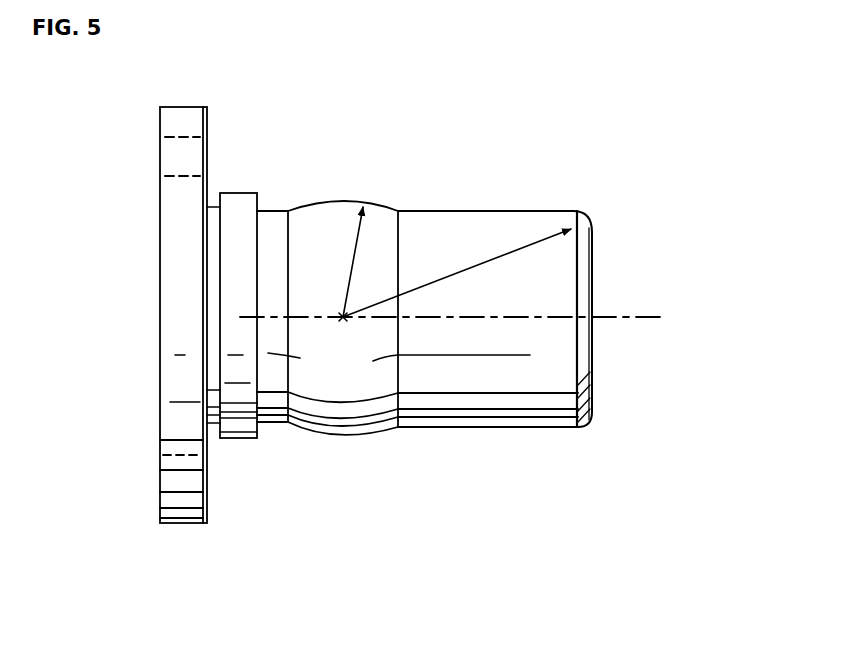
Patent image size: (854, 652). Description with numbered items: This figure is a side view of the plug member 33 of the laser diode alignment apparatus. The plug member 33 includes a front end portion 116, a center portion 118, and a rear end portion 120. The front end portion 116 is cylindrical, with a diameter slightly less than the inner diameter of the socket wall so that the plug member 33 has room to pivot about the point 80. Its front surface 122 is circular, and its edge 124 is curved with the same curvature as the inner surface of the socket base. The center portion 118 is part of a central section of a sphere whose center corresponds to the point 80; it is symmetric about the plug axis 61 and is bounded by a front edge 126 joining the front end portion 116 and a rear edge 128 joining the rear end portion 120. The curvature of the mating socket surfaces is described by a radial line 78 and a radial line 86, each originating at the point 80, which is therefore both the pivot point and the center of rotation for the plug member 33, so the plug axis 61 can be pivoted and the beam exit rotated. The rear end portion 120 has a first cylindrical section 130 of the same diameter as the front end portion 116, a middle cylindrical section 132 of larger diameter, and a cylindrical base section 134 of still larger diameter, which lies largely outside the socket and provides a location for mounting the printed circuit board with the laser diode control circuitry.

The plug member 33 is at (531, 117).
The plug axis 61 is at (646, 318).
The radial line 78 is at (355, 235).
The point 80 is at (343, 317).
The radial line 86 is at (510, 250).
The front end portion 116 is at (567, 205).
The center portion 118 is at (386, 198).
The rear end portion 120 is at (241, 188).
The front surface 122 is at (594, 250).
The edge 124 is at (596, 418).
The front edge 126 is at (400, 432).
The rear edge 128 is at (287, 432).
The first cylindrical section 130 is at (270, 252).
The middle cylindrical section 132 is at (236, 294).
The cylindrical base section 134 is at (172, 425).